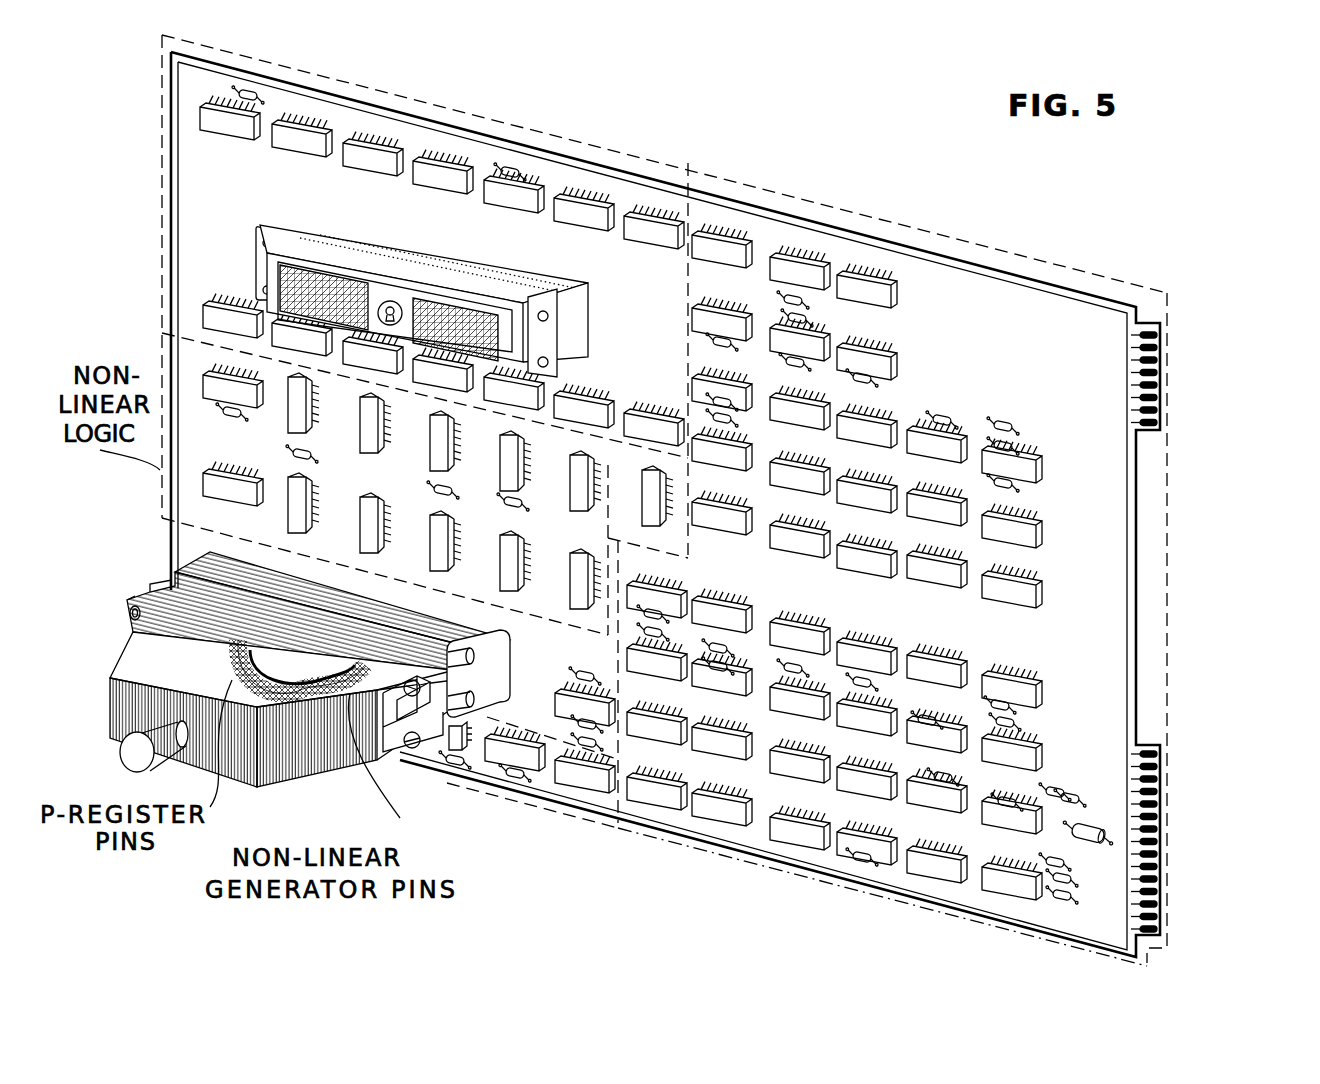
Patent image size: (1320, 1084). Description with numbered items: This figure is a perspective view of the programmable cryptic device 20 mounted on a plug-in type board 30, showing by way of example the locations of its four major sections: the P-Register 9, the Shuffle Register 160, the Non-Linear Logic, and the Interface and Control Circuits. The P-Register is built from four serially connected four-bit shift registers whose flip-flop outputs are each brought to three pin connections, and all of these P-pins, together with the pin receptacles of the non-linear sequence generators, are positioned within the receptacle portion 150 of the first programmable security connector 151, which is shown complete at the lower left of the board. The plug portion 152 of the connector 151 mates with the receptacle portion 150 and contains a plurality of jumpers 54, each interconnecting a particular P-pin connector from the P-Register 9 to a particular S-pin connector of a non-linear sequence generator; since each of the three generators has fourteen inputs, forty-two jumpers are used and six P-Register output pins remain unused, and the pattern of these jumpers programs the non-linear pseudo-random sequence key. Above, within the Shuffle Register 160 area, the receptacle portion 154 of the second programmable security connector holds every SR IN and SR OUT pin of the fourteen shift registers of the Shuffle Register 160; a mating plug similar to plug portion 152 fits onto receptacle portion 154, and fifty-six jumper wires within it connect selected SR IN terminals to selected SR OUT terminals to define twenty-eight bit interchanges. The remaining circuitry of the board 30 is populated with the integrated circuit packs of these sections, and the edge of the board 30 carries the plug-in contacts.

The programmable cryptic device 20 is at (687, 158).
The Shuffle Register 160 is at (305, 68).
The plug-in type board 30 is at (1073, 287).
The P-register 9 is at (567, 813).
The receptacle portion of second programmable security connector 154 is at (255, 262).
The receptacle portion 150 is at (205, 568).
The programmable security connector 151 is at (113, 597).
The plug portion 152 is at (125, 665).
The jumpers 54 is at (290, 693).